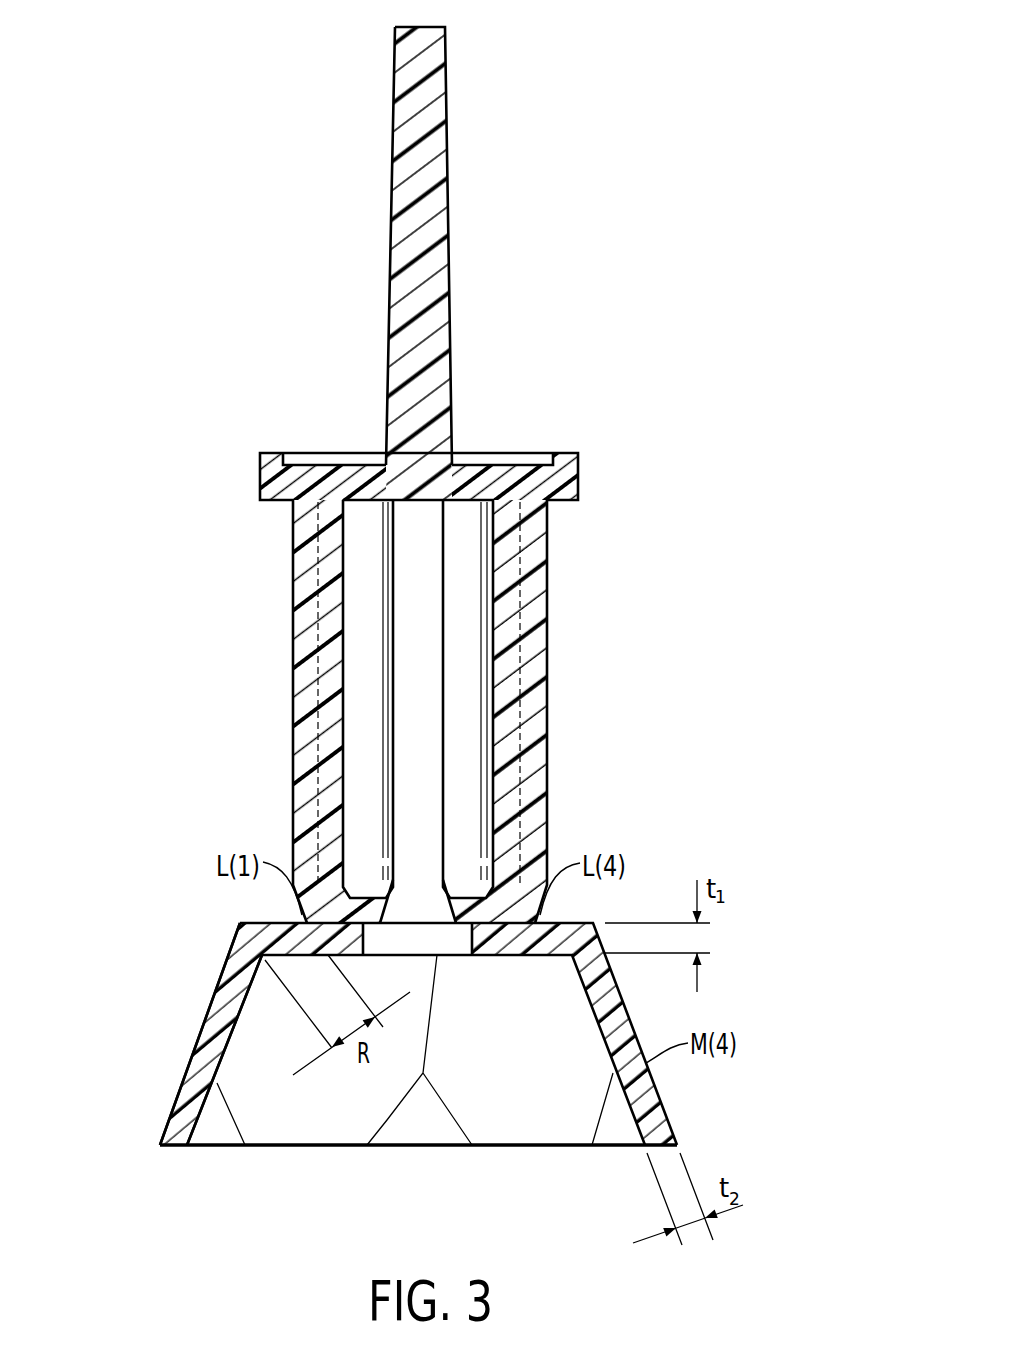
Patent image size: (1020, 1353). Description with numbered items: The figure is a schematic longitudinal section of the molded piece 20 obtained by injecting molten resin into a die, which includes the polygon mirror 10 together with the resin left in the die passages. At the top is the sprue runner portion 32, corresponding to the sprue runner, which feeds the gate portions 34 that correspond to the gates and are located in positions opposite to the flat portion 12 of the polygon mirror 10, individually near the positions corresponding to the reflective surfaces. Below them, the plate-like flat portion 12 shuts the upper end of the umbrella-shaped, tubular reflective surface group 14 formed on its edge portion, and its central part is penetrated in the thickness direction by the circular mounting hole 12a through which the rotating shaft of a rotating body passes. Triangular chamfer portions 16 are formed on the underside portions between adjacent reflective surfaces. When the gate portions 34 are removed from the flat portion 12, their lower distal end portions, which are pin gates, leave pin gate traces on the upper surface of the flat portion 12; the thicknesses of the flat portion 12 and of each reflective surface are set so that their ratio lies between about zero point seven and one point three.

The polygon mirror 10 is at (178, 924).
The flat portion 12 is at (260, 923).
The mounting hole 12a is at (366, 938).
The reflective surface group 14 is at (205, 1025).
The chamfer portions 16 is at (417, 1130).
The molded piece 20 is at (574, 359).
The sprue runner portion 32 is at (483, 298).
The gate portions 34 is at (313, 885).